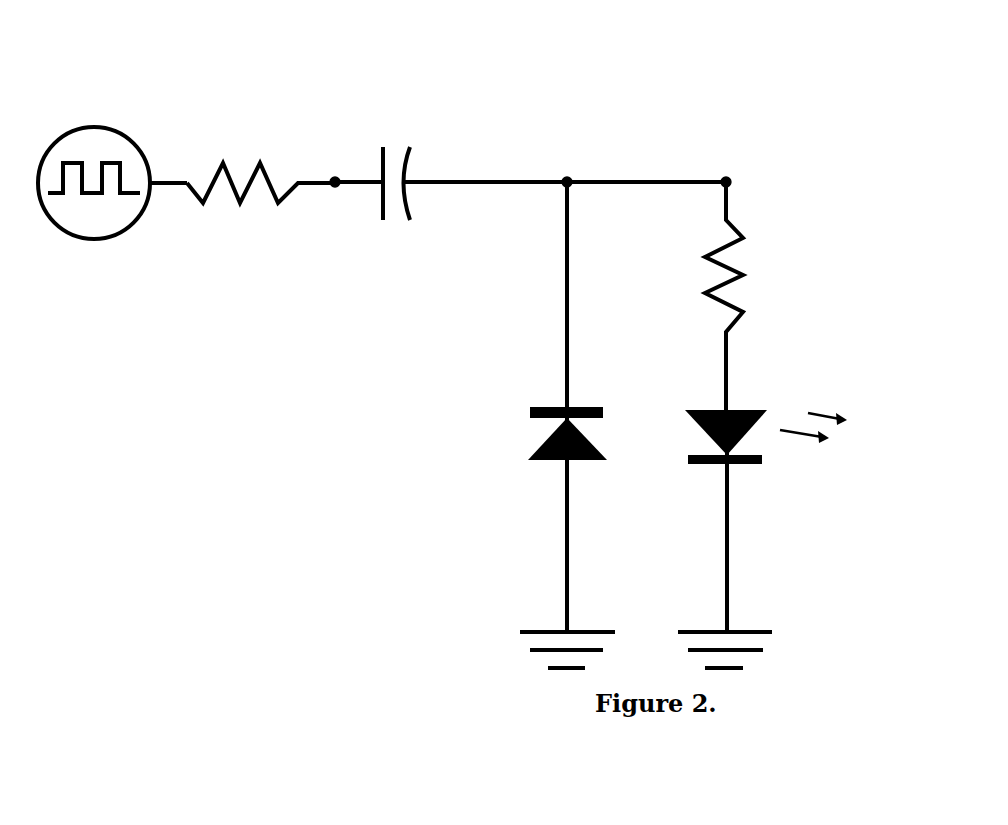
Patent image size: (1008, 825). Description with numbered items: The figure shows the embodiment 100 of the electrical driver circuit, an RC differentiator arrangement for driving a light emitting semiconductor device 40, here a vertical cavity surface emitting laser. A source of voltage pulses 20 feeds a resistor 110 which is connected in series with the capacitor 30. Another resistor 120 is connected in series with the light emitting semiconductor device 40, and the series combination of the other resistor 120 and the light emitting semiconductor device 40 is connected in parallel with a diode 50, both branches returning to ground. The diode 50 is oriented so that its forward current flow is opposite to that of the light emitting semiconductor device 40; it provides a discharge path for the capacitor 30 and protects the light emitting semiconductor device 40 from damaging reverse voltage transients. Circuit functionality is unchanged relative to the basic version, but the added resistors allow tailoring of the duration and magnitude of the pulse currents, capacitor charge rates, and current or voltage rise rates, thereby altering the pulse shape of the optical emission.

The source of voltage pulses 20 is at (113, 97).
The resistor 110 is at (262, 143).
The capacitor 30 is at (408, 128).
The other resistor 120 is at (752, 247).
The diode 50 is at (515, 407).
The light emitting semiconductor device 40 is at (750, 392).
The driver circuit embodiment 100 is at (247, 435).